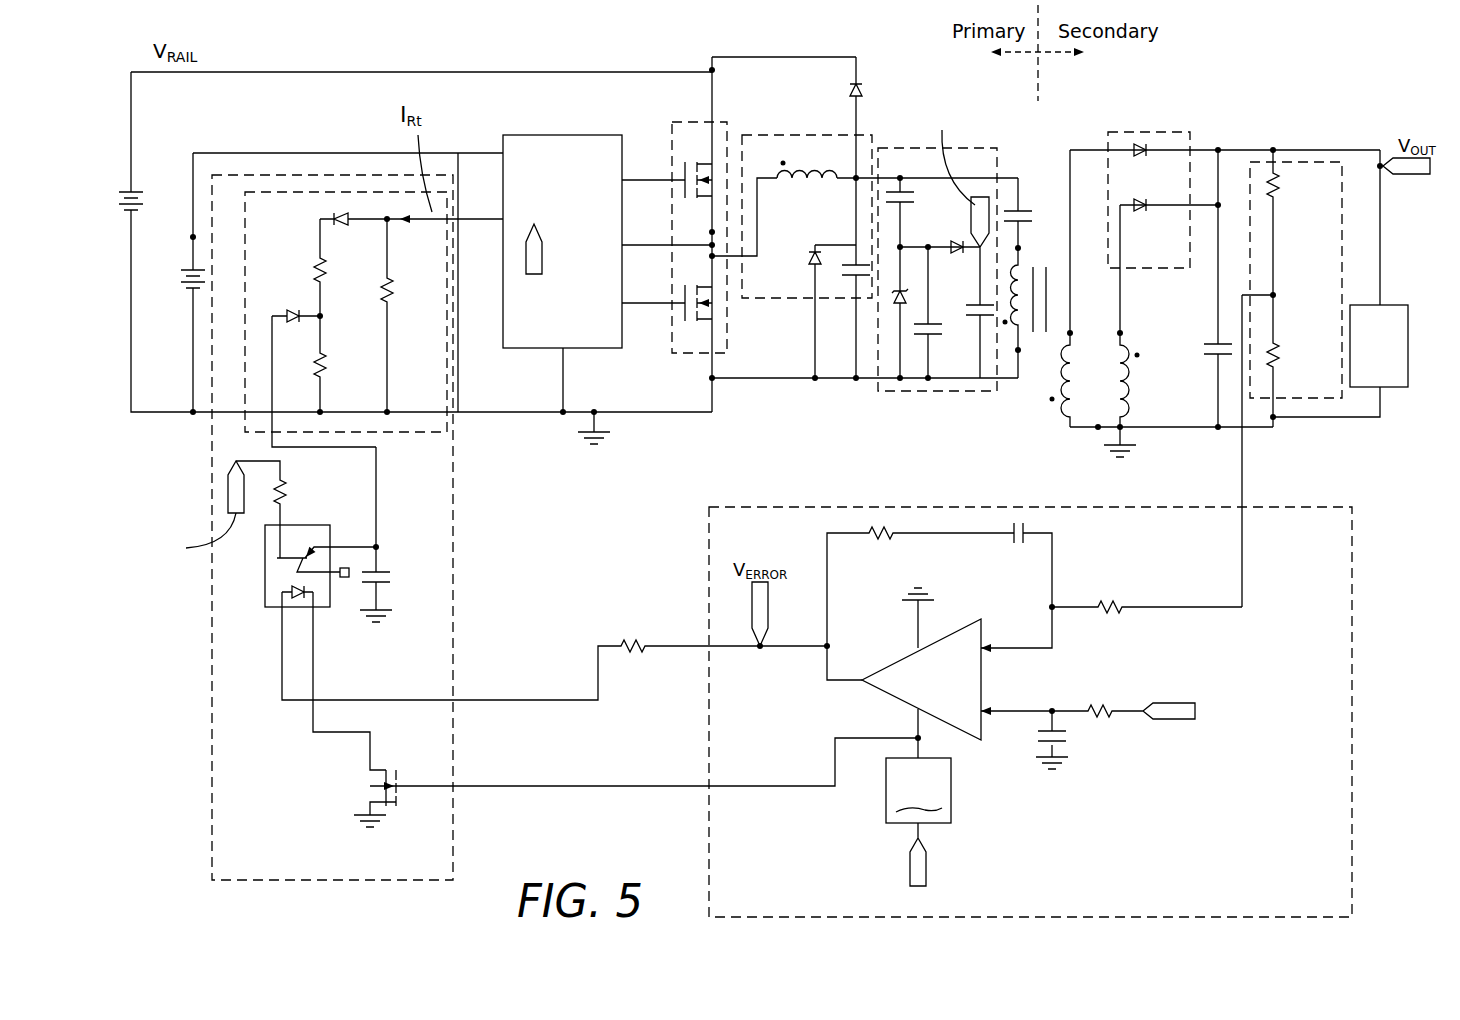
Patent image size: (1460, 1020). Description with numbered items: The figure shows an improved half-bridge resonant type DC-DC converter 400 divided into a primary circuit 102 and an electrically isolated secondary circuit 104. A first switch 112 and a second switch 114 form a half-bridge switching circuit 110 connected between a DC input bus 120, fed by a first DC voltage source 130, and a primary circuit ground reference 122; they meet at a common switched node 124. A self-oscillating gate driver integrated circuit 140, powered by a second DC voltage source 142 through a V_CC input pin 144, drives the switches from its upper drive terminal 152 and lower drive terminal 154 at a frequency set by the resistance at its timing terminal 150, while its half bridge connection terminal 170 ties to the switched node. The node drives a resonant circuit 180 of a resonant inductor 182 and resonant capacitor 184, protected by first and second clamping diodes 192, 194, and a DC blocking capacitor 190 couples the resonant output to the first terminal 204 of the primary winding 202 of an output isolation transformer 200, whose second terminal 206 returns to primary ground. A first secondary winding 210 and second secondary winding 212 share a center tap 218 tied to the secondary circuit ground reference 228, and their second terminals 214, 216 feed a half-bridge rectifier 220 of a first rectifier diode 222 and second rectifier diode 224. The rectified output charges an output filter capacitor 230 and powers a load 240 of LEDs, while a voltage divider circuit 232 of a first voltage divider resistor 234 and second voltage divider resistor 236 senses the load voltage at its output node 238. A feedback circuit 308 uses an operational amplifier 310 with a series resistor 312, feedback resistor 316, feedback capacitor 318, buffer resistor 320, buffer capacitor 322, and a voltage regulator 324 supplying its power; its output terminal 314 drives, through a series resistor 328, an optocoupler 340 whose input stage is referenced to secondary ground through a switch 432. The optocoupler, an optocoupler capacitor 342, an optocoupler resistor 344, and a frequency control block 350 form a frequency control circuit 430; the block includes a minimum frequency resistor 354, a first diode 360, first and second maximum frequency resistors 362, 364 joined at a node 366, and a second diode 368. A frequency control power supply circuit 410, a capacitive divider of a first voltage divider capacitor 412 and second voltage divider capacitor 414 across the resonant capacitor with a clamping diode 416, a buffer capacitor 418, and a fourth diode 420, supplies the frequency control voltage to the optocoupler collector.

The primary circuit 102 is at (985, 148).
The secondary circuit 104 is at (1070, 150).
The half-bridge switching circuit 110 is at (690, 122).
The first switch 112 is at (713, 187).
The second switch 114 is at (712, 303).
The DC input bus 120 is at (300, 72).
The primary circuit ground reference 122 is at (600, 445).
The common switched node 124 is at (714, 257).
The first DC voltage source 130 is at (122, 215).
The self-oscillating half-bridge gate driver integrated circuit 140 is at (560, 135).
The second DC voltage source 142 is at (183, 280).
The V_CC input pin 144 is at (503, 150).
The timing terminal 150 is at (503, 219).
The upper drive terminal 152 is at (624, 180).
The lower drive terminal 154 is at (624, 303).
The half bridge connection terminal 170 is at (624, 245).
The resonant circuit 180 is at (820, 135).
The resonant inductor 182 is at (786, 182).
The resonant capacitor 184 is at (857, 262).
The DC blocking capacitor 190 is at (1020, 208).
The first clamping diode 192 is at (860, 85).
The second clamping diode 194 is at (812, 275).
The output isolation transformer 200 is at (1043, 345).
The primary winding 202 is at (1014, 328).
The first terminal of the primary winding 204 is at (1021, 246).
The second terminal of the primary winding 206 is at (1018, 353).
The first secondary winding 210 is at (1084, 376).
The second secondary winding 212 is at (1128, 360).
The second terminal of the first secondary winding 214 is at (1072, 333).
The second terminal of the second secondary winding 216 is at (1122, 333).
The center tap 218 is at (1118, 442).
The half-bridge rectifier 220 is at (1170, 132).
The first rectifier diode 222 is at (1140, 156).
The second rectifier diode 224 is at (1140, 212).
The secondary circuit ground reference 228 is at (368, 832).
The output filter capacitor 230 is at (1216, 340).
The voltage divider circuit 232 is at (1300, 162).
The first voltage divider resistor 234 is at (1278, 195).
The second voltage divider resistor 236 is at (1278, 362).
The output node of the voltage divider circuit 238 is at (1275, 292).
The load 240 is at (1380, 305).
The feedback circuit 308 is at (1348, 507).
The operational amplifier 310 is at (983, 678).
The series resistor 312 is at (1096, 605).
The output terminal 314 is at (845, 690).
The feedback resistor 316 is at (868, 540).
The feedback capacitor 318 is at (1012, 540).
The buffer resistor 320 is at (1100, 706).
The buffer capacitor 322 is at (1034, 733).
The voltage regulator 324 is at (918, 811).
The series resistor 328 is at (626, 642).
The optocoupler 340 is at (263, 562).
The optocoupler capacitor 342 is at (382, 575).
The optocoupler resistor 344 is at (288, 490).
The frequency control block 350 is at (282, 192).
The minimum frequency resistor 354 is at (393, 282).
The first diode 360 is at (345, 226).
The first maximum frequency resistor 362 is at (326, 262).
The second maximum frequency resistor 364 is at (326, 358).
The node 366 is at (320, 316).
The second diode 368 is at (285, 312).
The improved half-bridge resonant type DC-DC converter 400 is at (1246, 70).
The frequency control power supply circuit 410 is at (915, 148).
The first voltage divider capacitor 412 is at (904, 203).
The second voltage divider capacitor 414 is at (928, 338).
The clamping diode 416 is at (902, 305).
The buffer capacitor 418 is at (978, 318).
The fourth diode 420 is at (957, 255).
The frequency control circuit 430 is at (385, 882).
The switch 432 is at (398, 778).